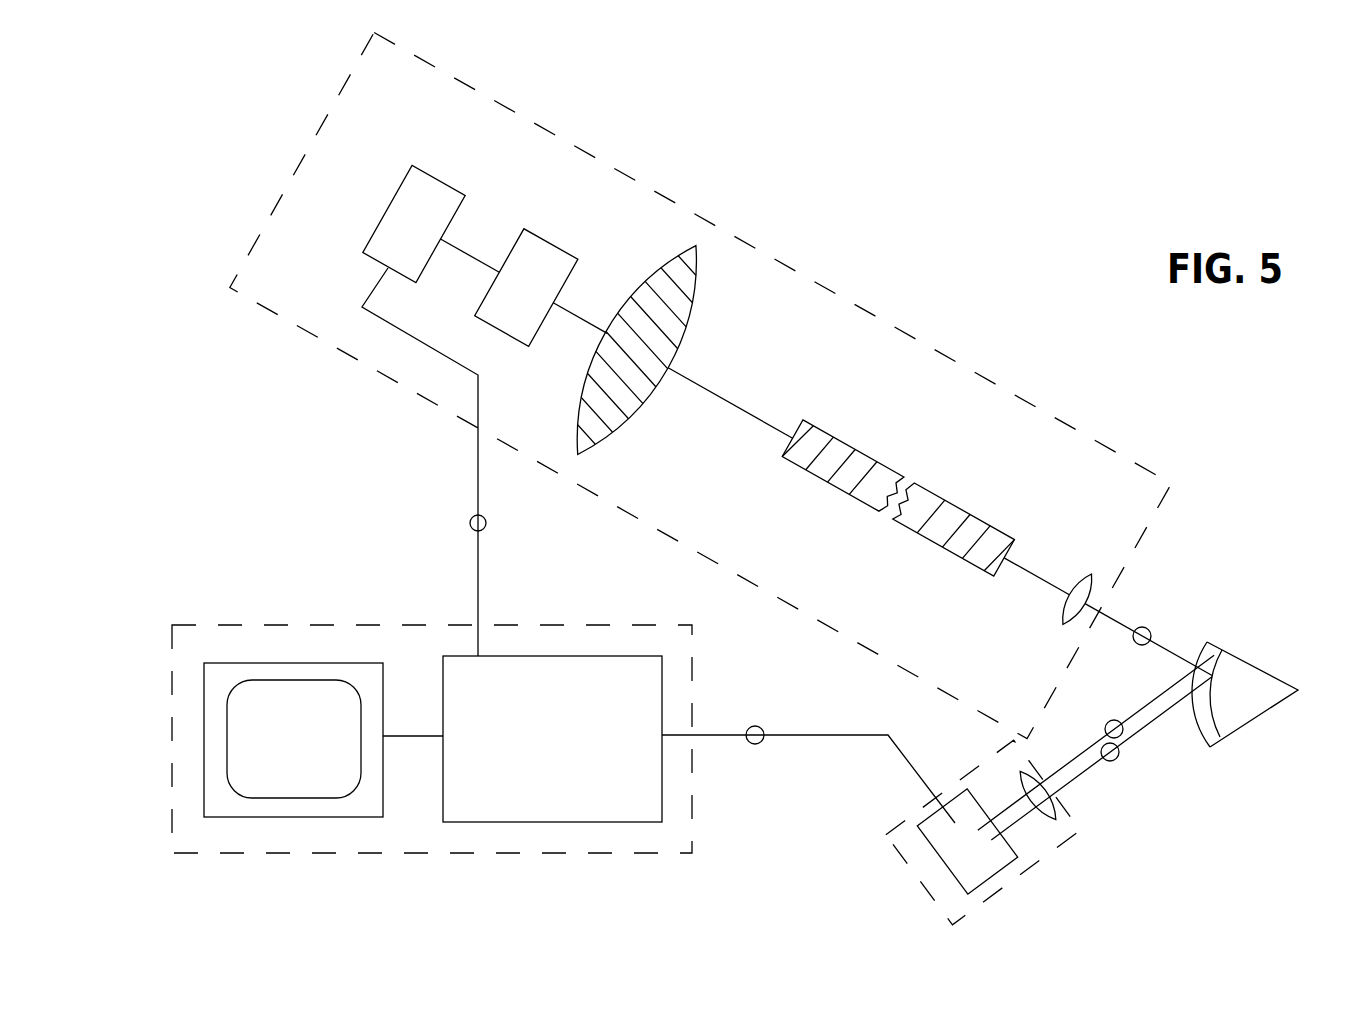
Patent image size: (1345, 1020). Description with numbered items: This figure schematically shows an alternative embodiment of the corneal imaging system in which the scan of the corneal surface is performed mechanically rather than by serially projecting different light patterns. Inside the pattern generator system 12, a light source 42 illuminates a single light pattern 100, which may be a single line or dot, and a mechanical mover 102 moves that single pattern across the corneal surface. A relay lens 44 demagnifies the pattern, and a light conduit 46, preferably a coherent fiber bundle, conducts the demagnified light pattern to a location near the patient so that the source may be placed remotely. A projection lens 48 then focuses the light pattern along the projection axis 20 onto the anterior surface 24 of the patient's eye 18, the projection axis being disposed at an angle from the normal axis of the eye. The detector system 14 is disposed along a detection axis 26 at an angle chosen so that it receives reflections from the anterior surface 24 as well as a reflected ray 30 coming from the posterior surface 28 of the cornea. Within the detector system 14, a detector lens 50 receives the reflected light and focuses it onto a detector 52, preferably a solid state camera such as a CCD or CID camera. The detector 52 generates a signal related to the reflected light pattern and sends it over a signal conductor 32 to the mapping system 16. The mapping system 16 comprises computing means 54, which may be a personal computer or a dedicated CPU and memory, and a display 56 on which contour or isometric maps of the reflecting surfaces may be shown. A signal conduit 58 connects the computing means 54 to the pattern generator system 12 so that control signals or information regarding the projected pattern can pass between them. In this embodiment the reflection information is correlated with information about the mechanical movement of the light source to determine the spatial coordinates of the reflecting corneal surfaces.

The pattern generator system 12 is at (825, 290).
The detector system 14 is at (1007, 883).
The mapping system 16 is at (185, 625).
The patient's eye 18 is at (1263, 664).
The projection axis 20 is at (1146, 628).
The anterior surface 24 is at (1195, 655).
The detection axis 26 is at (1113, 720).
The posterior surface 28 is at (1222, 730).
The reflected ray 30 is at (1119, 755).
The signal conductor 32 is at (759, 743).
The light source 42 is at (345, 309).
The relay lens 44 is at (700, 245).
The light conduit 46 is at (955, 517).
The projection lens 48 is at (1088, 573).
The detector lens 50 is at (1050, 807).
The detector 52 is at (953, 860).
The computing means 54 is at (562, 747).
The display 56 is at (307, 747).
The signal conduit 58 is at (470, 523).
The single light pattern 100 is at (553, 242).
The mechanical mover 102 is at (438, 177).